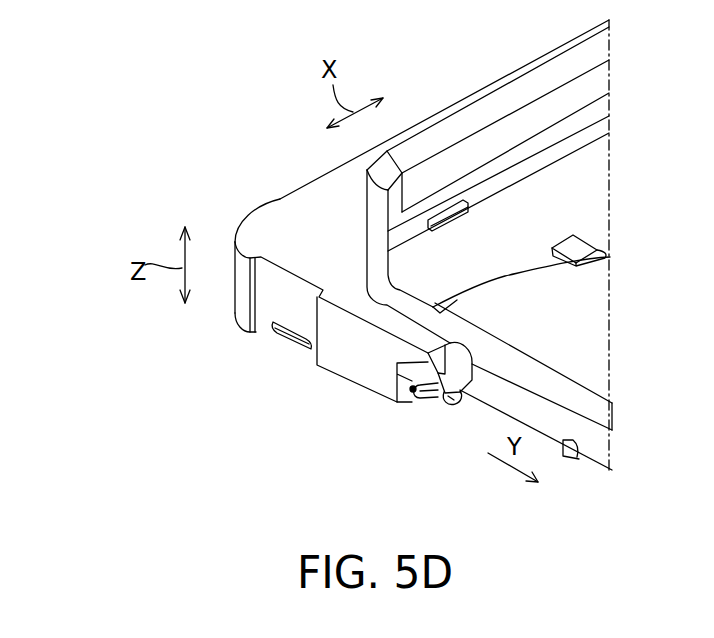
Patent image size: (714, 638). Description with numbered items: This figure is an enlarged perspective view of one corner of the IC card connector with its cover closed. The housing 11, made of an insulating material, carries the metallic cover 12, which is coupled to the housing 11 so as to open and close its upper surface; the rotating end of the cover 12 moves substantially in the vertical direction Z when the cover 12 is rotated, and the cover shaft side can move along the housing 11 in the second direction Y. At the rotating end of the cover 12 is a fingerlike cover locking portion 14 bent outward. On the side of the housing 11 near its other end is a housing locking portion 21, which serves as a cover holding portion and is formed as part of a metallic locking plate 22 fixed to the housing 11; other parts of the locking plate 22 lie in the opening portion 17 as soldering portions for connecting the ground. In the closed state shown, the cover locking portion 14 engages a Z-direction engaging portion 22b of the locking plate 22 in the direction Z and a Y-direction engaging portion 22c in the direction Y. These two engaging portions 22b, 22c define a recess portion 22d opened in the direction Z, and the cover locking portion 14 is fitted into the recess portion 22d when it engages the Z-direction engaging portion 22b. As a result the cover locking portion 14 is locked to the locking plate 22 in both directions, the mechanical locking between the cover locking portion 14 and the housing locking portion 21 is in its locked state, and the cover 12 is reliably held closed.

The housing 11 is at (343, 352).
The cover 12 is at (587, 440).
The cover locking portion 14 is at (411, 397).
The opening portion 17 is at (533, 207).
The housing locking portion 21 is at (452, 398).
The locking plate 22 is at (458, 406).
The Z-direction engaging portion 22b is at (404, 401).
The Y-direction engaging portion 22c is at (442, 400).
The recess portion 22d is at (414, 396).